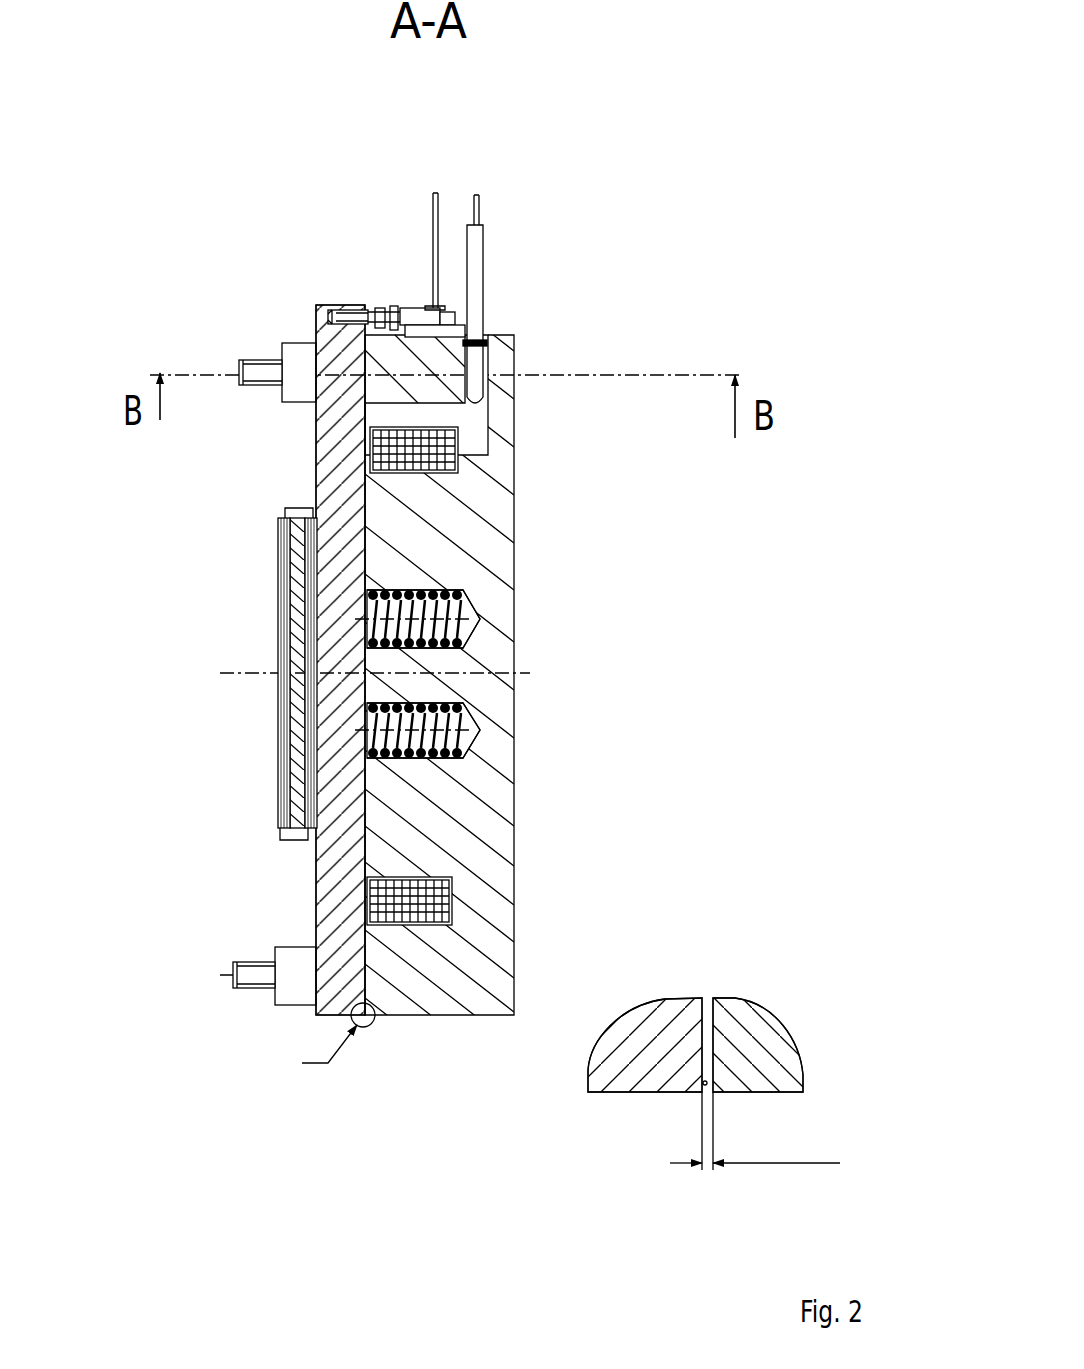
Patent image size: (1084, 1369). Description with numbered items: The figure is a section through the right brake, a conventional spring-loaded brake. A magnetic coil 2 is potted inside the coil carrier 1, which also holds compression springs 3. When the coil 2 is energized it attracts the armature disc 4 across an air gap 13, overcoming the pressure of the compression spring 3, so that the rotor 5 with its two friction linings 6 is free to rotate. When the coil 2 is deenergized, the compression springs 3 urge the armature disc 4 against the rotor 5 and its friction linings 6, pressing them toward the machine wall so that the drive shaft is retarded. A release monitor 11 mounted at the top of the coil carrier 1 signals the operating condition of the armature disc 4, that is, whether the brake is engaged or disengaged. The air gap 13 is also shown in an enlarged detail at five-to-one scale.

The coil carrier 1 is at (500, 512).
The magnetic coil 2 is at (437, 435).
The compression spring 3 is at (447, 613).
The armature disc 4 is at (333, 340).
The rotor 5 is at (287, 508).
The friction linings 6 is at (317, 582).
The release monitor 11 is at (420, 323).
The air gap 13 is at (362, 1020).